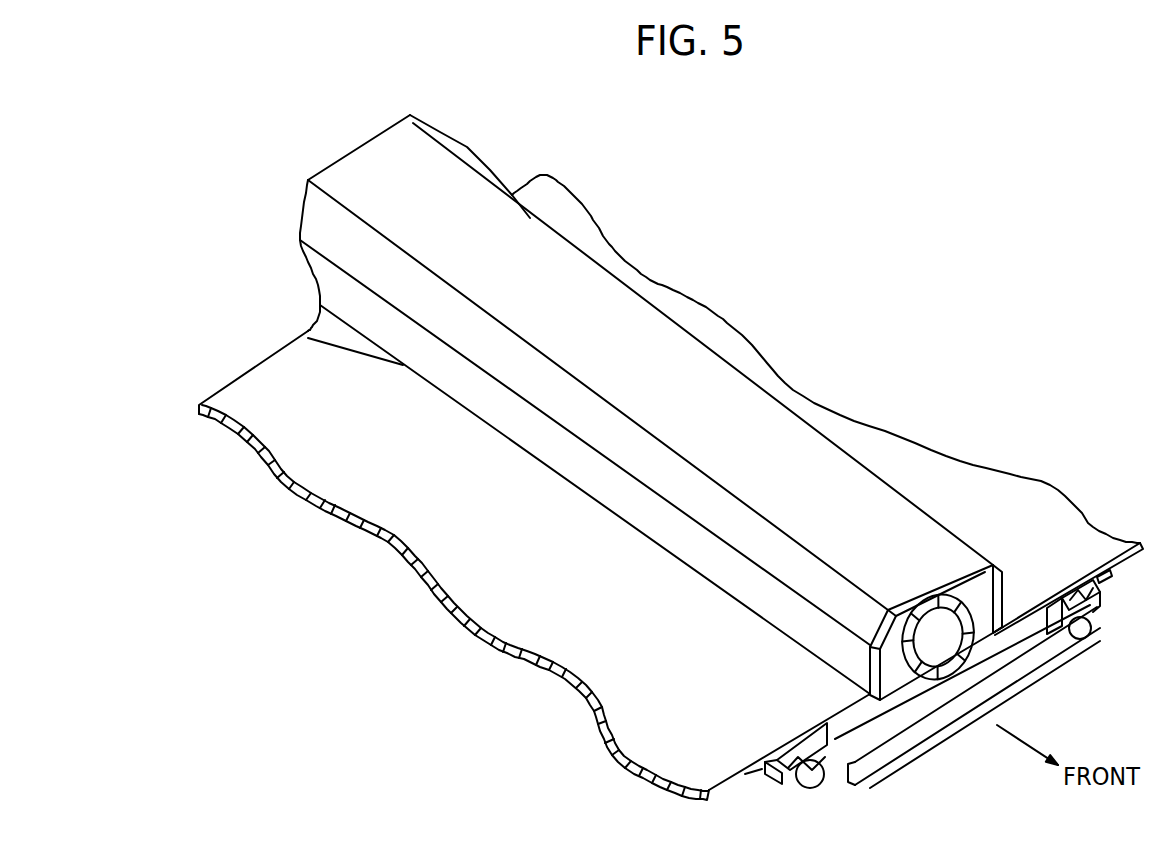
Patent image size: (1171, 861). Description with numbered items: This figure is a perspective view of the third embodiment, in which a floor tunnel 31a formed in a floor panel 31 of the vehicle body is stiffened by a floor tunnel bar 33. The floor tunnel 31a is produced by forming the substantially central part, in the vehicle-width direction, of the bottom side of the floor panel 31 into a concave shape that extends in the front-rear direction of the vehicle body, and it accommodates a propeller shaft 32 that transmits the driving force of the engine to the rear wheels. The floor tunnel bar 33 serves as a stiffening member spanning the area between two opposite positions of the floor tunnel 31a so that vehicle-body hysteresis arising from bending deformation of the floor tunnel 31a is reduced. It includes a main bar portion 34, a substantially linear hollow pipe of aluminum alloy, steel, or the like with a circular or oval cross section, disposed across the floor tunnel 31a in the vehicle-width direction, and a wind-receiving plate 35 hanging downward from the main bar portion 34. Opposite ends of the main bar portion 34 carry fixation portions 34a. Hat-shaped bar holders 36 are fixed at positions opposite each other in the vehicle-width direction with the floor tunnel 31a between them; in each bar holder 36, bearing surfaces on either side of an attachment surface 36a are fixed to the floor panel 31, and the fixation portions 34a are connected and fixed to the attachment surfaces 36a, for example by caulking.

The floor panel 31 is at (960, 468).
The floor tunnel 31a is at (997, 560).
The propeller shaft 32 is at (903, 620).
The floor tunnel bar 33 is at (958, 694).
The main bar portion 34 is at (935, 705).
The fixation portion 34a is at (1080, 630).
The wind-receiving plate 35 is at (1030, 675).
The bar holder 36 is at (1067, 607).
The attachment surface 36a is at (1093, 613).